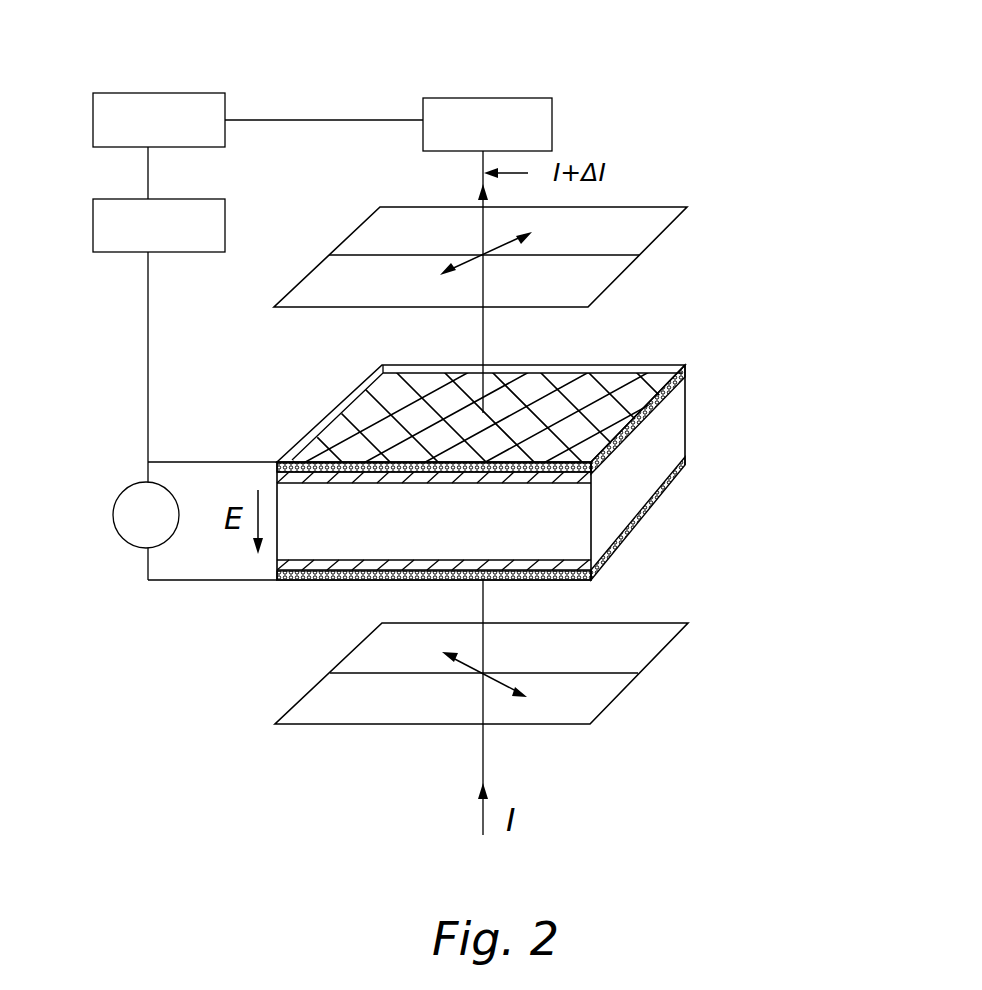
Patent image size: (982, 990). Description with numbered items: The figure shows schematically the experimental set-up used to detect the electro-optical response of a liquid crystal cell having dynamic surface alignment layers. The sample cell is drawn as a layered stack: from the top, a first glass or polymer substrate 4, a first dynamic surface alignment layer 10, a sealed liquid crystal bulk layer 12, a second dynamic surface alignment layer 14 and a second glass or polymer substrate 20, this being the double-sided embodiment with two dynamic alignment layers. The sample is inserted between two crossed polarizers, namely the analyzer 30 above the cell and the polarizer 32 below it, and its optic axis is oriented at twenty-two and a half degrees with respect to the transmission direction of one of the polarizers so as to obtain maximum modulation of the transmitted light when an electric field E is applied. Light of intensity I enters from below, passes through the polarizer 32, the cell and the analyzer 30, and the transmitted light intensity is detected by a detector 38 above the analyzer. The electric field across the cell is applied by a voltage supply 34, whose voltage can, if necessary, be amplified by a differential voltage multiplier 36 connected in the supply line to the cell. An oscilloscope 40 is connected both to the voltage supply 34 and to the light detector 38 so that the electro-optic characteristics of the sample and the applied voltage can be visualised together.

The first glass or polymer substrate 4 is at (685, 367).
The first dynamic surface alignment layer 10 is at (687, 377).
The sealed liquid crystal bulk layer 12 is at (687, 423).
The second dynamic surface alignment layer 14 is at (687, 460).
The second glass or polymer substrate 20 is at (640, 533).
The analyzer 30 is at (650, 250).
The polarizer 32 is at (653, 662).
The voltage supply 34 is at (123, 535).
The differential voltage multiplier 36 is at (120, 247).
The detector 38 is at (497, 107).
The oscilloscope 40 is at (175, 110).